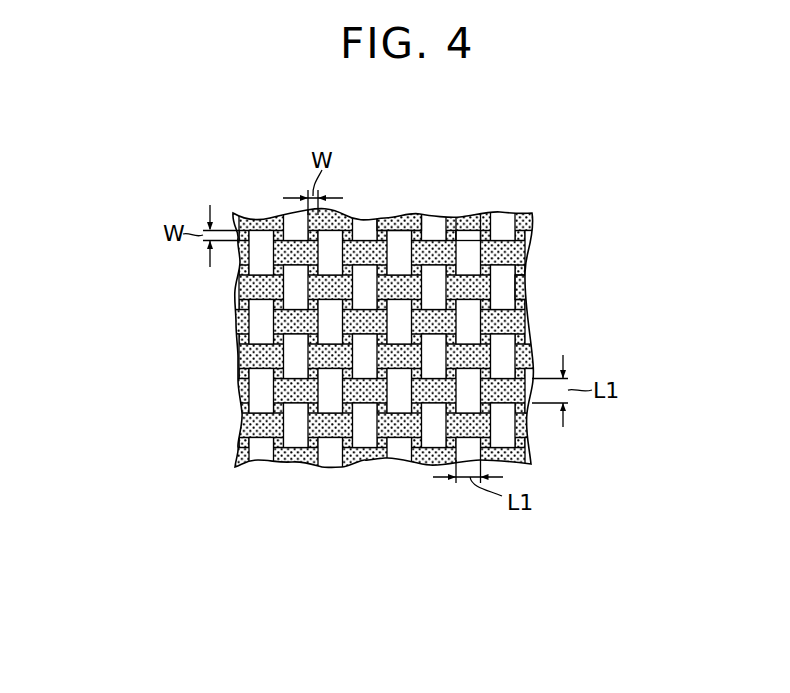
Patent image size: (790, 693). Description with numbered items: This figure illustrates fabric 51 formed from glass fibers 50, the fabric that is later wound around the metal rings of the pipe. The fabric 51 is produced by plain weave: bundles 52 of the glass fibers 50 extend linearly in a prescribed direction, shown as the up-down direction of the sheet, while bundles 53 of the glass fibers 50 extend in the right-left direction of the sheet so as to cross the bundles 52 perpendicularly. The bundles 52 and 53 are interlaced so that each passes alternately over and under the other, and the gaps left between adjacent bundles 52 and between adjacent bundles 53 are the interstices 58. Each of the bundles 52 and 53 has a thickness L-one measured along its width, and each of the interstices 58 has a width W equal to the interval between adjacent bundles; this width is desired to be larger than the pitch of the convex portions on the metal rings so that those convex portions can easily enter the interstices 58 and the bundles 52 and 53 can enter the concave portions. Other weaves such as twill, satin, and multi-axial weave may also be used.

The glass fibers 50 is at (416, 321).
The fabric 51 is at (416, 378).
The bundles 52 is at (432, 222).
The bundles 53 is at (529, 247).
The interstices 58 is at (450, 232).